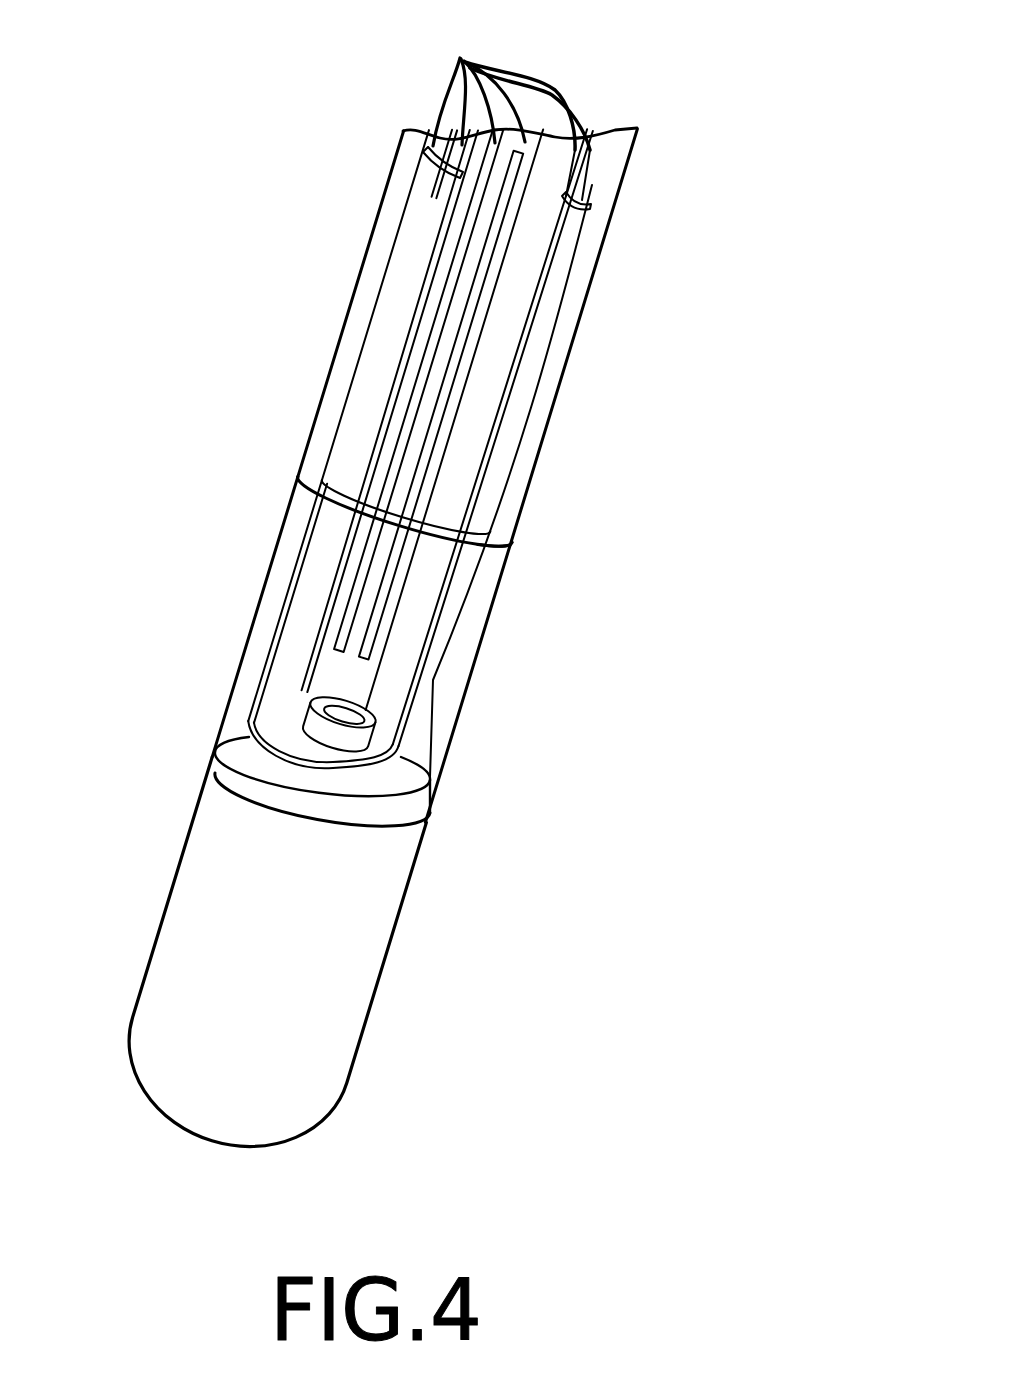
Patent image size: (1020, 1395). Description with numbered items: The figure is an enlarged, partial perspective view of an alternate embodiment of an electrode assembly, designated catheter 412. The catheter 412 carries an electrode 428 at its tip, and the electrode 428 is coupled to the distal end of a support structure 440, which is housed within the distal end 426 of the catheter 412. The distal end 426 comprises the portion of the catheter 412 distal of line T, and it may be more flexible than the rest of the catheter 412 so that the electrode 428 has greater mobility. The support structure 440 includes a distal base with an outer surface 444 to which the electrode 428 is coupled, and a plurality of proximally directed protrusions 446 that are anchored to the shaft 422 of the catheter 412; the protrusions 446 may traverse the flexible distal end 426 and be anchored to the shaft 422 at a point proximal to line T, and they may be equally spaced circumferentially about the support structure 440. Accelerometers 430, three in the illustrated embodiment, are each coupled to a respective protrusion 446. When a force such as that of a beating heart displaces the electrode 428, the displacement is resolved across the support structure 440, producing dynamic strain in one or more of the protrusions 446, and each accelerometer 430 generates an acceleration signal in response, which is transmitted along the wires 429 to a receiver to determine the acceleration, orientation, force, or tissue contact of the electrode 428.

The catheter 412 is at (646, 158).
The shaft 422 is at (356, 292).
The distal end 426 is at (237, 700).
The electrode 428 is at (154, 944).
The wires 429 is at (501, 76).
The accelerometers 430 is at (413, 492).
The support structure 440 is at (428, 722).
The outer surface 444 is at (388, 771).
The protrusions 446 is at (422, 238).
The line T is at (507, 546).